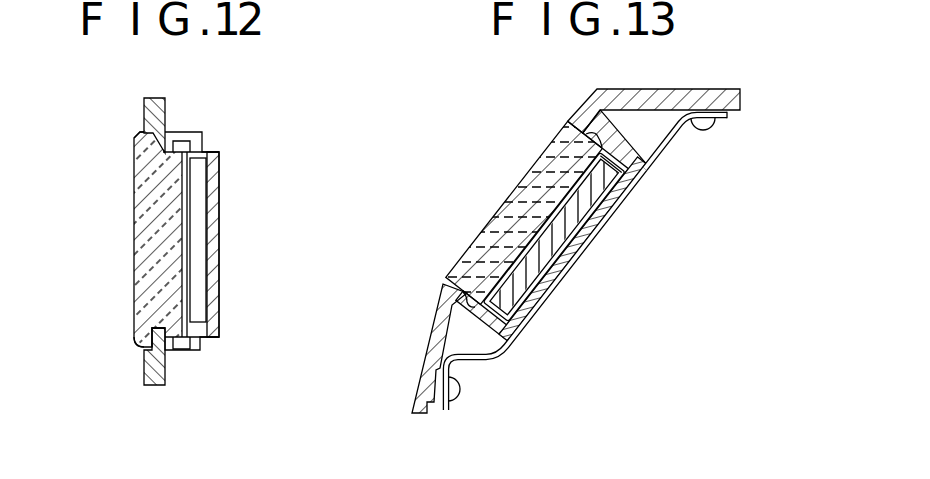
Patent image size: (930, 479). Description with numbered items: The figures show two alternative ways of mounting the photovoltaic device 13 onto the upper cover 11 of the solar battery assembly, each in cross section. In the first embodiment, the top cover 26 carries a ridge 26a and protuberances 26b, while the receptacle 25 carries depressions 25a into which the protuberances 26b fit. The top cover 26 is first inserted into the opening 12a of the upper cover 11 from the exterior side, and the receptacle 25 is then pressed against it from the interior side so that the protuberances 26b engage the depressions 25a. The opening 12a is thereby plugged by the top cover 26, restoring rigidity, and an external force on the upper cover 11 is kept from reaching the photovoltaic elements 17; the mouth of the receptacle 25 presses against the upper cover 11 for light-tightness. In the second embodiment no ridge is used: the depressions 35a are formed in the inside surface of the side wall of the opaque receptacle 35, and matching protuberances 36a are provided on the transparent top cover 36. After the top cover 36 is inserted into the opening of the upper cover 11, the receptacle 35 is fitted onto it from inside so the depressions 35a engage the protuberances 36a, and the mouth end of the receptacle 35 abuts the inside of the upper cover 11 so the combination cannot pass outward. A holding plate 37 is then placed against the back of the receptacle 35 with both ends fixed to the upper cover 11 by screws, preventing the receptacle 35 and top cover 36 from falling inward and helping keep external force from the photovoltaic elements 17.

In FIG. 12, the upper cover 11 is at (143, 124).
In FIG. 13, the upper cover 11 is at (428, 342).
In FIG. 12, the opening 12a is at (157, 323).
In FIG. 12, the photovoltaic device 13 is at (126, 192).
In FIG. 13, the photovoltaic device 13 is at (514, 178).
In FIG. 12, the photovoltaic elements 17 is at (203, 197).
In FIG. 13, the photovoltaic elements 17 is at (547, 292).
In FIG. 12, the receptacle 25 is at (218, 257).
In FIG. 12, the depressions 25a is at (192, 142).
In FIG. 12, the top cover 26 is at (137, 263).
In FIG. 12, the ridge 26a is at (140, 146).
In FIG. 12, the protuberances 26b is at (173, 142).
In FIG. 13, the receptacle 35 is at (573, 250).
In FIG. 13, the depressions 35a is at (603, 136).
In FIG. 13, the top cover 36 is at (495, 226).
In FIG. 13, the protuberances 36a is at (588, 140).
In FIG. 13, the holding plate 37 is at (659, 160).